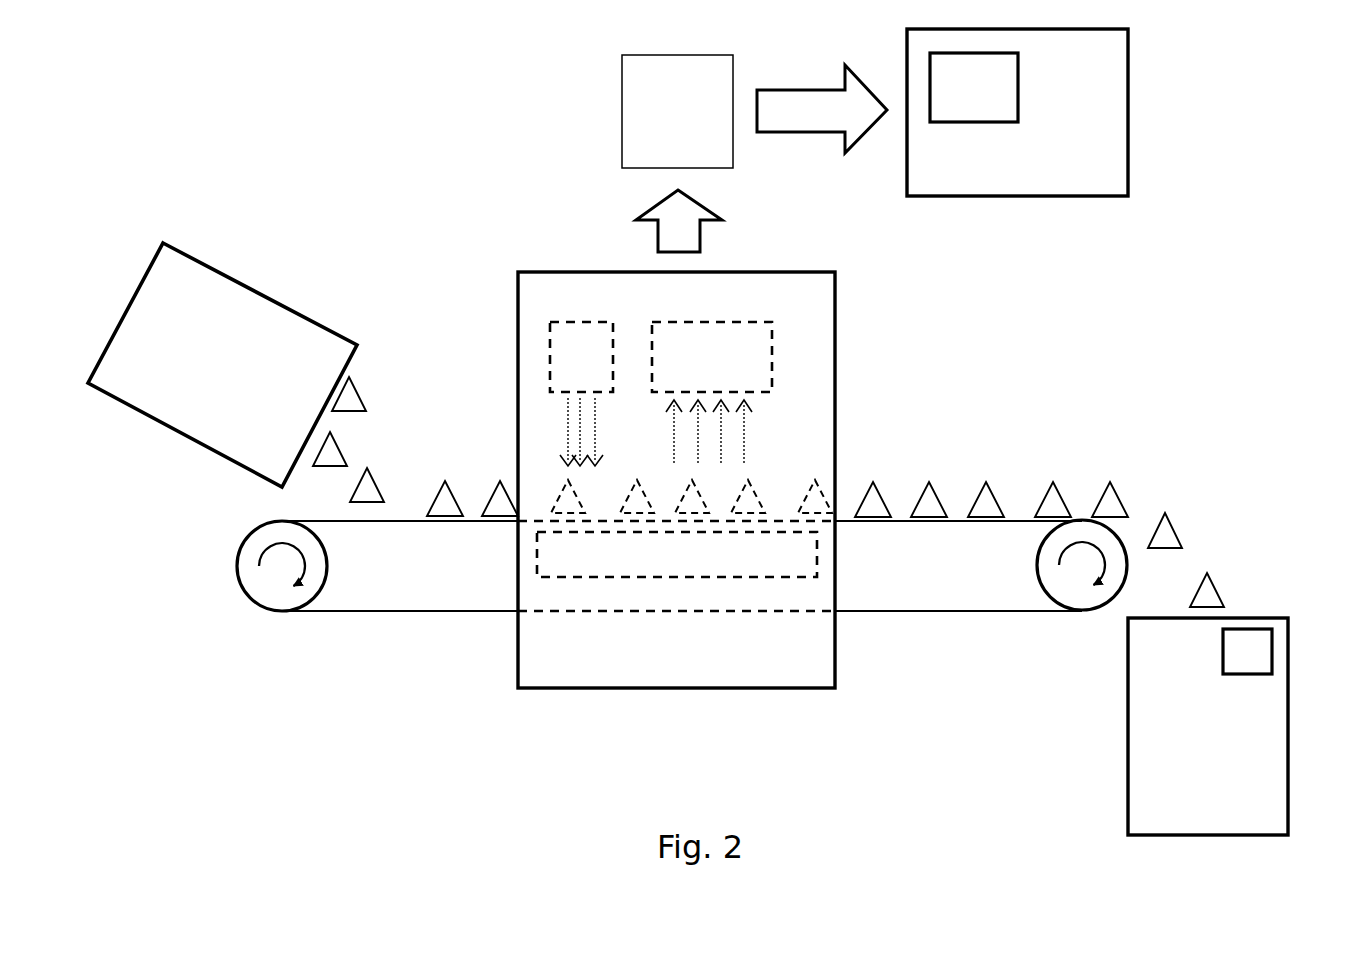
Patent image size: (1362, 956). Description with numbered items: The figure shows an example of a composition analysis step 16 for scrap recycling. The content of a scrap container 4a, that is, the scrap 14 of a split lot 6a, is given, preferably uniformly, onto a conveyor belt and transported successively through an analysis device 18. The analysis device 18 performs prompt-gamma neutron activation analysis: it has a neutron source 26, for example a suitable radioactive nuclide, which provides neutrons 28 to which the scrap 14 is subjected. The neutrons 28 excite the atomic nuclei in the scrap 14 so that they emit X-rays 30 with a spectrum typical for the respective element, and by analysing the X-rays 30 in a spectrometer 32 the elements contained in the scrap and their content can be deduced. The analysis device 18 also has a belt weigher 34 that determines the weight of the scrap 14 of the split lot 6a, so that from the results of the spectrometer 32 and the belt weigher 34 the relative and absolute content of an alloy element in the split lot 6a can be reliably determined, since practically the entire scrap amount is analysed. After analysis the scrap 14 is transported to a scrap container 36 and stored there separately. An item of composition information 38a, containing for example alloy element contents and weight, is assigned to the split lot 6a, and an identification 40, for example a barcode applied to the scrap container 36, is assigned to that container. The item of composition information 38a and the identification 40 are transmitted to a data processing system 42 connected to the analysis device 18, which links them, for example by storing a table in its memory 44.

The analysis step 16 is at (222, 95).
The scrap container 4a is at (209, 266).
The split lot 6a is at (409, 349).
The scrap 14 is at (374, 481).
The analysis device 18 is at (787, 271).
The neutron source 26 is at (581, 357).
The neutrons 28 is at (598, 431).
The X-rays 30 is at (745, 431).
The spectrometer 32 is at (712, 357).
The belt weigher 34 is at (677, 554).
The scrap container 36 is at (1208, 726).
The item of composition information 38a is at (622, 118).
The identification 40 is at (1273, 650).
The data processing system 42 is at (1129, 102).
The memory 44 is at (974, 87).